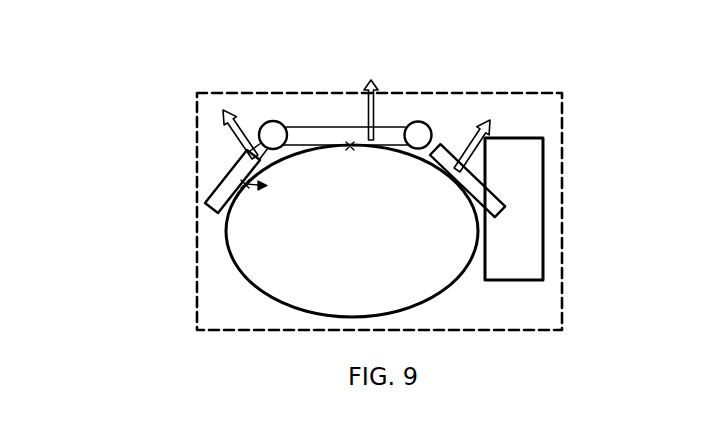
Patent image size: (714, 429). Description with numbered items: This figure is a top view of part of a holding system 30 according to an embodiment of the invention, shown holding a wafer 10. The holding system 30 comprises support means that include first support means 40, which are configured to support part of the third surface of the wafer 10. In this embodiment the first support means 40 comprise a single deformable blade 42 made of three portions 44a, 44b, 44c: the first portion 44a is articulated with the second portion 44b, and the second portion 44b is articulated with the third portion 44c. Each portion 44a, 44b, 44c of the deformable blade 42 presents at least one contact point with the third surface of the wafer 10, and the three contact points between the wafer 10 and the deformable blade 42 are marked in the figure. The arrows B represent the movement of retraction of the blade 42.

The wafer 10 is at (265, 243).
The holding system 30 is at (545, 129).
The first support means 40 is at (525, 237).
The deformable blade 42 is at (279, 130).
The first portion 44a is at (213, 195).
The second portion 44b is at (353, 130).
The third portion 44c is at (440, 146).